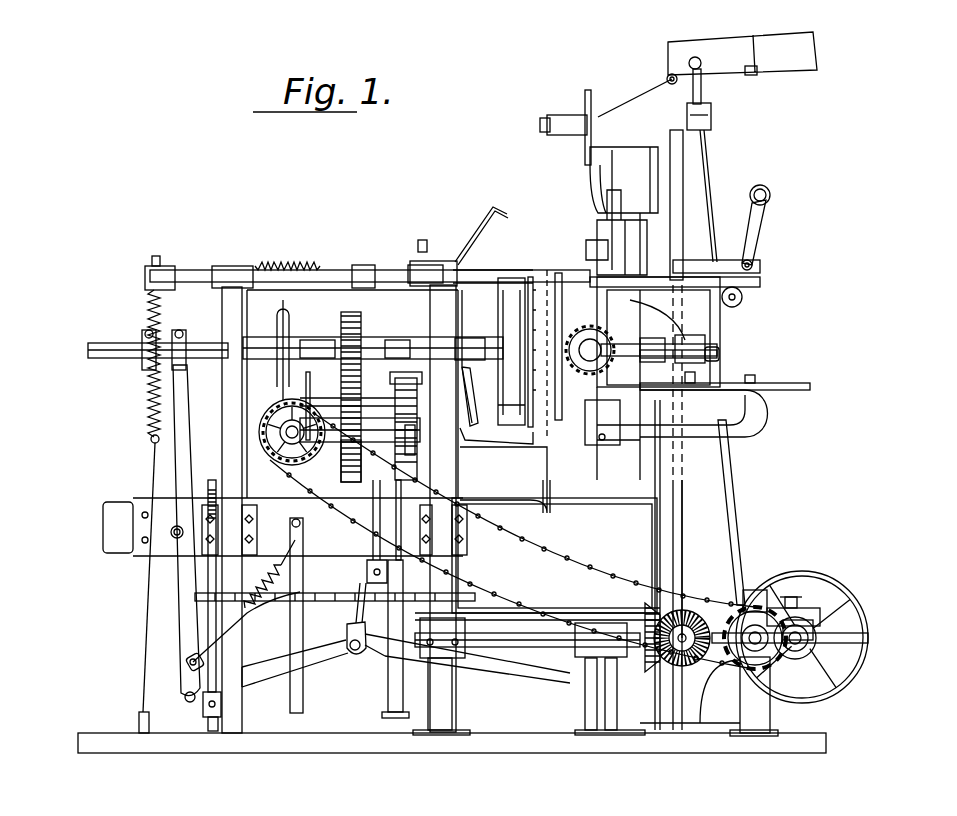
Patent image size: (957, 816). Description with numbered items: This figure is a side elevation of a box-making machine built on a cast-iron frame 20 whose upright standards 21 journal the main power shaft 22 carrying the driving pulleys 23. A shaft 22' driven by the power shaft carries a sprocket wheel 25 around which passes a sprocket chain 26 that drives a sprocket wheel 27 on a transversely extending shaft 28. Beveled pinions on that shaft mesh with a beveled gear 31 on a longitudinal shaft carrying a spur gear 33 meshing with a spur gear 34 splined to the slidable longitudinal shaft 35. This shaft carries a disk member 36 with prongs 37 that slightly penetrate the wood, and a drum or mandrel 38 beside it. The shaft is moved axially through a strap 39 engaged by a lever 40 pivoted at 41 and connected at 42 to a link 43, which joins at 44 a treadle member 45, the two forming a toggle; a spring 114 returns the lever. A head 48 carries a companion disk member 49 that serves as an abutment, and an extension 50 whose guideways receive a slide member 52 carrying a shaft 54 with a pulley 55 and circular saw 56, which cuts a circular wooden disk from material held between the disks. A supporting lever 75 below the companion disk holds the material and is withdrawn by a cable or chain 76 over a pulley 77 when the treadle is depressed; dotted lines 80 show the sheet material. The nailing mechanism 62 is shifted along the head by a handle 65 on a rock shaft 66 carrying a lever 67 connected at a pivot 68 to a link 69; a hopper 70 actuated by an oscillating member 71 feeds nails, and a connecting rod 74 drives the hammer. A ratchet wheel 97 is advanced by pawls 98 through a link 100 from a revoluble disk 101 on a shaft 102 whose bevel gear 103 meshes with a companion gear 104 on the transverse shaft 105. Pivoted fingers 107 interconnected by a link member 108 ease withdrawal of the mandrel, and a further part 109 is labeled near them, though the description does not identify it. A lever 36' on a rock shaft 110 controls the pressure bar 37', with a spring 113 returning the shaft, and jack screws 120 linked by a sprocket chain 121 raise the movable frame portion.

The frame 20 is at (234, 310).
The upright standards 21 is at (770, 718).
The main power shaft 22 is at (808, 637).
The shaft 22' is at (803, 597).
The driving pulleys 23 is at (866, 610).
The sprocket wheel 25 is at (818, 650).
The sprocket chain 26 is at (575, 560).
The sprocket wheel 27 is at (290, 438).
The transversely extending shaft 28 is at (286, 432).
The beveled gear 31 is at (310, 386).
The spur gear 33 is at (351, 482).
The spur gear 34 is at (350, 312).
The longitudinal shaft 35 is at (185, 343).
The disk member 36 is at (540, 333).
The lever 36' is at (413, 234).
The projections or prongs 37 is at (572, 346).
The pressure bar 37' is at (504, 251).
The drum or mandrel 38 is at (512, 278).
The strap 39 is at (142, 333).
The lever 40 is at (165, 386).
The pivot 41 is at (170, 536).
The connection 42 is at (184, 697).
The link 43 is at (258, 680).
The pivot 44 is at (352, 652).
The treadle member 45 is at (498, 670).
The head 48 is at (722, 336).
The companion disk member 49 is at (560, 400).
The extension 50 is at (760, 422).
The slide member 52 is at (748, 388).
The shaft 54 is at (722, 352).
The pulley 55 is at (675, 338).
The circular saw 56 is at (600, 336).
The nailing mechanism 62 is at (612, 105).
The handle 65 is at (762, 212).
The rock shaft 66 is at (744, 298).
The lever 67 is at (754, 266).
The pivot 68 is at (765, 258).
The link 69 is at (735, 262).
The feed member or hopper 70 is at (716, 48).
The oscillating member 71 is at (708, 160).
The connecting rod 74 is at (683, 462).
The supporting lever 75 is at (552, 495).
The cable or chain 76 is at (352, 604).
The pulley 77 is at (367, 575).
The dotted lines 80 is at (550, 270).
The ratchet wheel 97 is at (415, 440).
The pawls 98 is at (412, 378).
The link 100 is at (462, 532).
The revoluble disk 101 is at (420, 700).
The longitudinally extending shaft 102 is at (553, 650).
The bevel gear 103 is at (664, 660).
The companion gear 104 is at (693, 670).
The transverse shaft 105 is at (686, 600).
The pivoted fingers 107 is at (478, 232).
The link member 108 is at (474, 372).
The bracket 109 is at (505, 214).
The rock shaft 110 is at (402, 262).
The spring 113 is at (146, 306).
The spring 114 is at (190, 665).
The jack screws 120 is at (215, 660).
The sprocket chain 121 is at (340, 580).